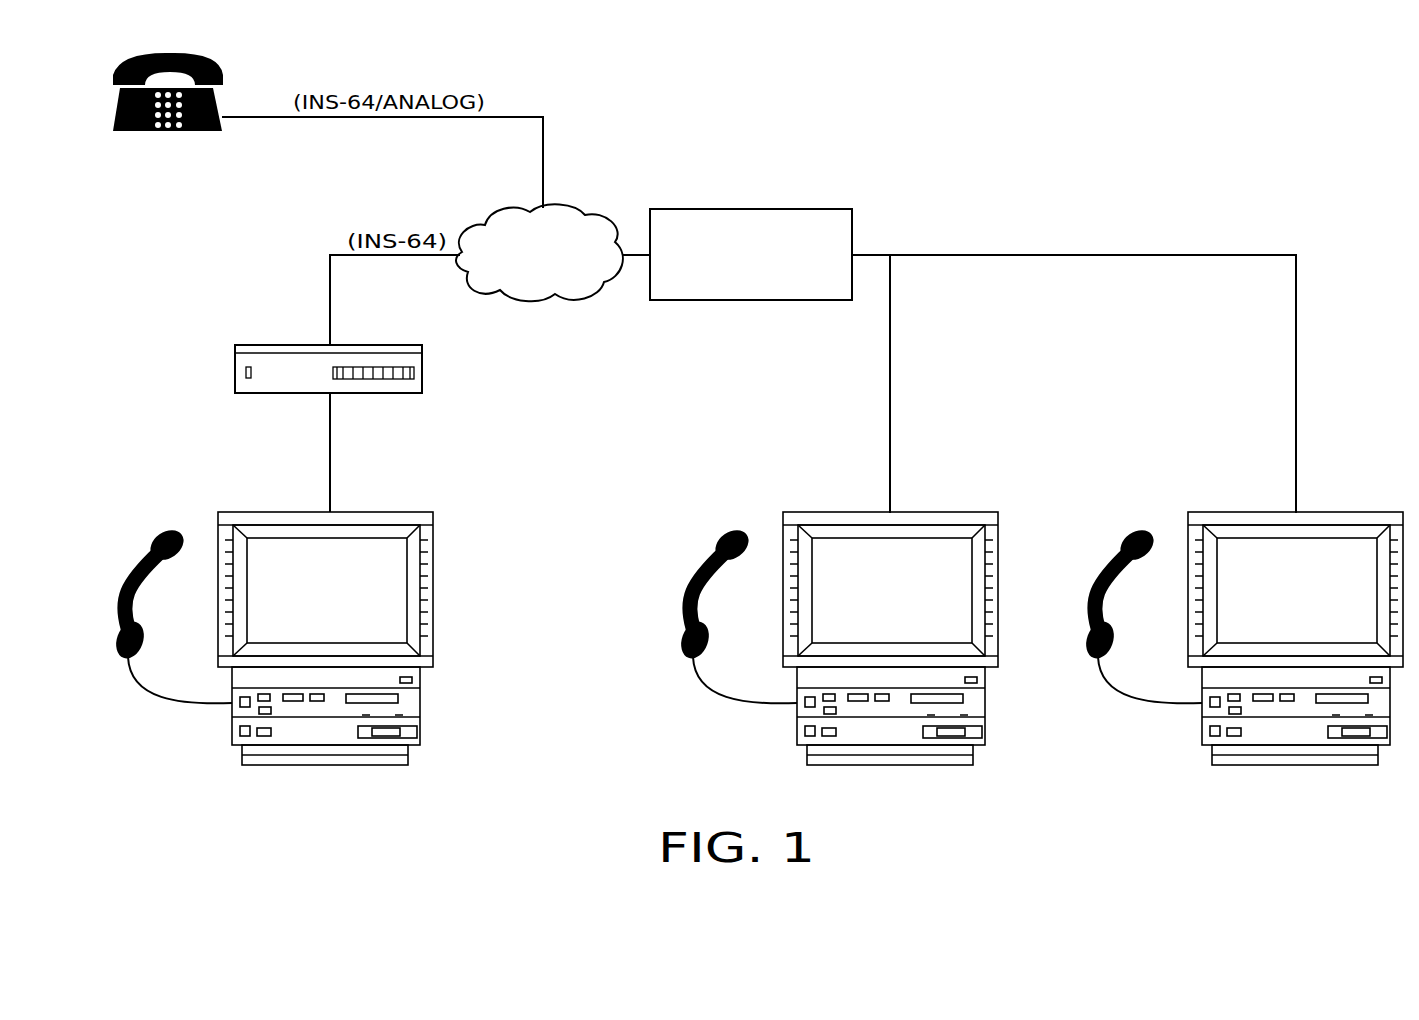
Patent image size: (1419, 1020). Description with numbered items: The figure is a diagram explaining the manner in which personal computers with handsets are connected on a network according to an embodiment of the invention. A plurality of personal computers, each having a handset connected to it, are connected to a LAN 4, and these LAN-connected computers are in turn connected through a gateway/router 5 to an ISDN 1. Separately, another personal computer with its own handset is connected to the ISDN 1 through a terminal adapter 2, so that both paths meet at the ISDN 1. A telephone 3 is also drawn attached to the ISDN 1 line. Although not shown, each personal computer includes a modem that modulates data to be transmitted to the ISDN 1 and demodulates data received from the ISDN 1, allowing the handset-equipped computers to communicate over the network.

The ISDN 1 is at (567, 210).
The terminal adapter 2 is at (423, 370).
The telephone 3 is at (182, 132).
The LAN 4 is at (1027, 255).
The gateway/router 5 is at (760, 209).